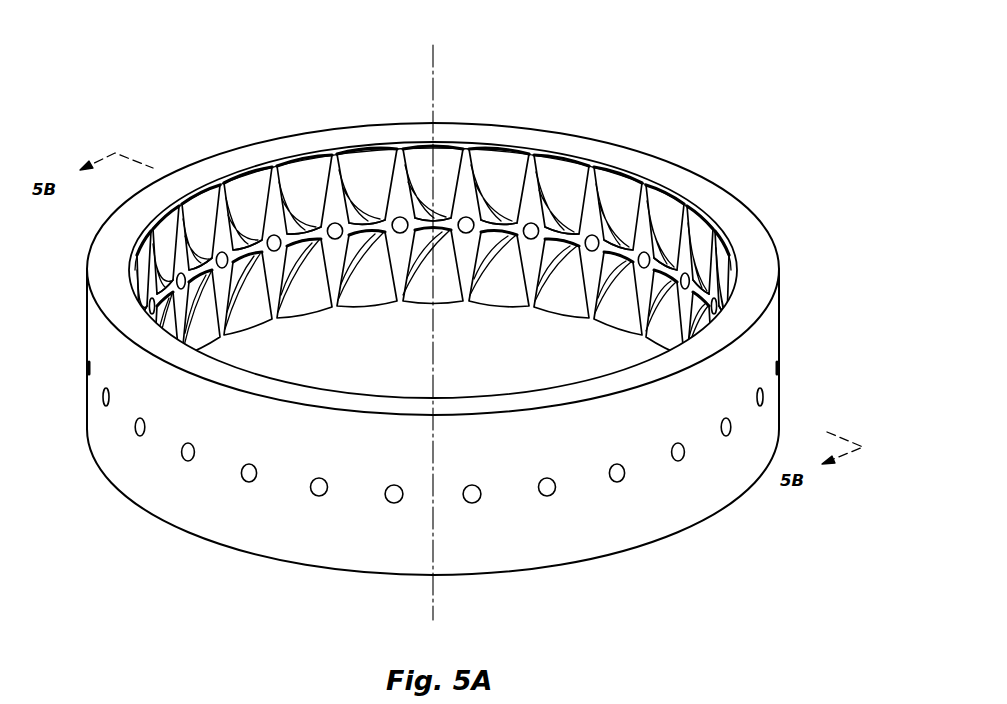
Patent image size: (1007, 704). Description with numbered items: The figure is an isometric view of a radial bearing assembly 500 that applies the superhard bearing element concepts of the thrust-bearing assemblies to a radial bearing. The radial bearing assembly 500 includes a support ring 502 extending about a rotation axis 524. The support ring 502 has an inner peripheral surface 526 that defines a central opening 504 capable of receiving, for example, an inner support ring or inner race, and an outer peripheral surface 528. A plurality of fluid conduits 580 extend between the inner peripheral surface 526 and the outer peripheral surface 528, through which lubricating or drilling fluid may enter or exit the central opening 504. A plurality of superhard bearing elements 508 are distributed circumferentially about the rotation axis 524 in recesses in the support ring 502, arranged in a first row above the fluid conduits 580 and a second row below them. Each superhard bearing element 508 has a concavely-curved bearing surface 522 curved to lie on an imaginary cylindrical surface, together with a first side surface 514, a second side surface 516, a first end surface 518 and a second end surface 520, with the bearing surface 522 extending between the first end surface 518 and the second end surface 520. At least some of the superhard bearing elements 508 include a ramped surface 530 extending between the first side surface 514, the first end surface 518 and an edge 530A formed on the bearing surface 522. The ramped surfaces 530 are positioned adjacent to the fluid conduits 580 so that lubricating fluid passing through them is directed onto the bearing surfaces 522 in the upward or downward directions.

The radial bearing assembly 500 is at (766, 58).
The support ring 502 is at (765, 272).
The central opening 504 is at (376, 384).
The superhard bearing elements 508 is at (568, 205).
The first side surface 514 is at (340, 180).
The second side surface 516 is at (407, 205).
The first end surface 518 is at (372, 245).
The second end surface 520 is at (576, 190).
The bearing surface 522 is at (612, 196).
The rotation axis 524 is at (431, 80).
The inner peripheral surface 526 is at (655, 318).
The outer peripheral surface 528 is at (674, 516).
The ramped surface 530 is at (355, 215).
The edge 530A is at (566, 148).
The fluid conduits 580 is at (228, 235).